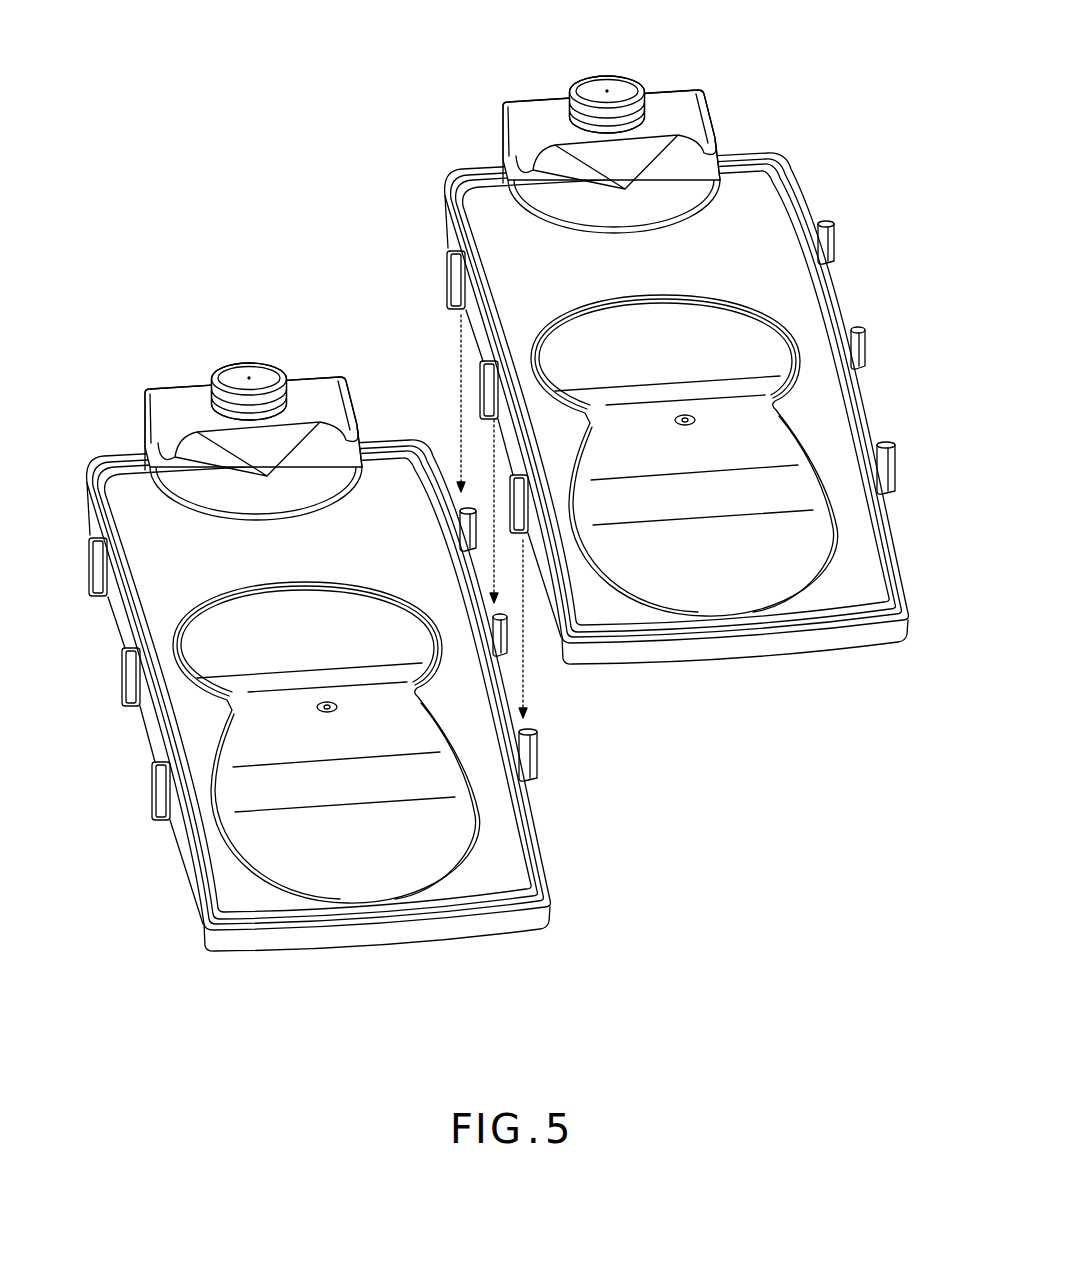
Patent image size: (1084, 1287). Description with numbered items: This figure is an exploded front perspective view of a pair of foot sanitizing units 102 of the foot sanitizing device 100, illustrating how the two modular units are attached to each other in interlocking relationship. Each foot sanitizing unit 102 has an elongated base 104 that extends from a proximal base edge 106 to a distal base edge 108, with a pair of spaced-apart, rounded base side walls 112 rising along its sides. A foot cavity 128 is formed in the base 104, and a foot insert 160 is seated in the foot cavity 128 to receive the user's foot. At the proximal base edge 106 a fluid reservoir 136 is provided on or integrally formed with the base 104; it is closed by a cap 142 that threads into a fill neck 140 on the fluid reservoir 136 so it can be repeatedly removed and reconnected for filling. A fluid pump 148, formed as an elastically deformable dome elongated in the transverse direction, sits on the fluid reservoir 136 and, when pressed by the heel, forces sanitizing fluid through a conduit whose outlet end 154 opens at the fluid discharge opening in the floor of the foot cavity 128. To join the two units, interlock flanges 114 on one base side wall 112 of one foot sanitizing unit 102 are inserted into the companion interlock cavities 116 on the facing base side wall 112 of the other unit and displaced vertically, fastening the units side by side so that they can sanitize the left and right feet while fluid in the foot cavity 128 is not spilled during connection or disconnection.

The foot sanitizing device 100 is at (160, 158).
The foot sanitizing unit 102 is at (303, 360).
The base 104 is at (497, 832).
The proximal base edge 106 is at (117, 462).
The distal base edge 108 is at (382, 945).
The base side walls 112 is at (152, 733).
The interlock flange 114 is at (90, 568).
The interlock cavity 116 is at (537, 750).
The foot cavity 128 is at (219, 606).
The fluid reservoir 136 is at (140, 392).
The fill neck 140 is at (217, 407).
The cap 142 is at (244, 372).
The fluid pump 148 is at (268, 455).
The outlet end 154 is at (327, 700).
The foot insert 160 is at (290, 612).